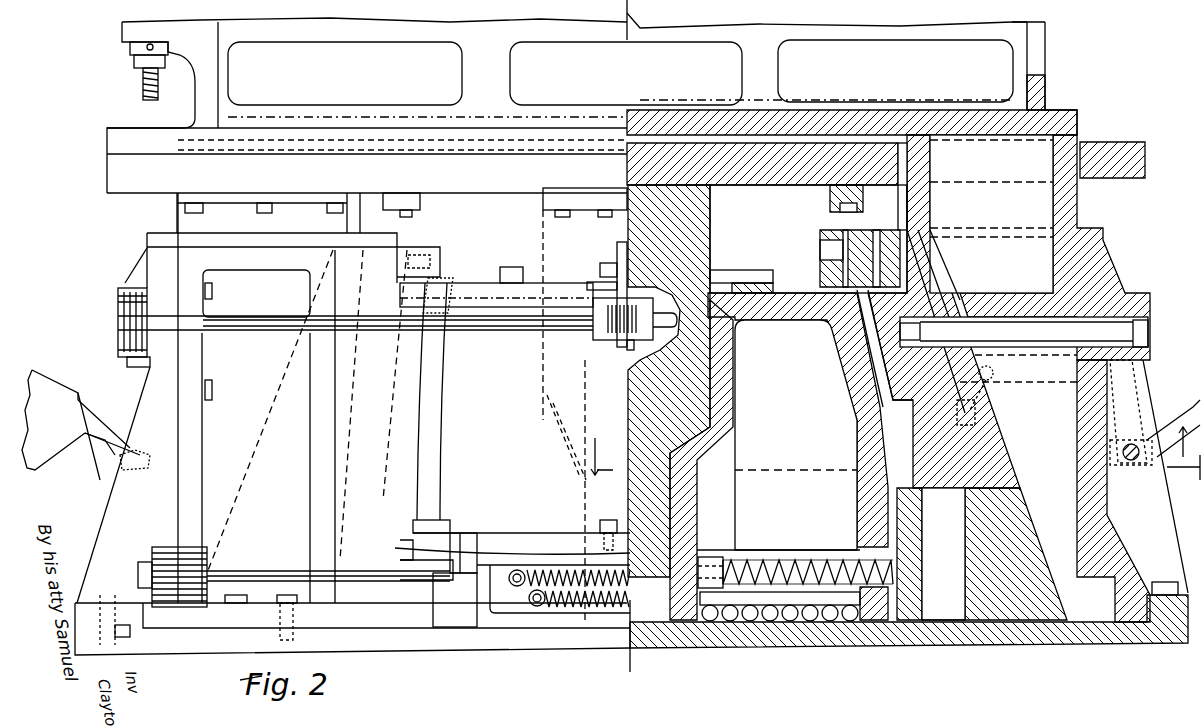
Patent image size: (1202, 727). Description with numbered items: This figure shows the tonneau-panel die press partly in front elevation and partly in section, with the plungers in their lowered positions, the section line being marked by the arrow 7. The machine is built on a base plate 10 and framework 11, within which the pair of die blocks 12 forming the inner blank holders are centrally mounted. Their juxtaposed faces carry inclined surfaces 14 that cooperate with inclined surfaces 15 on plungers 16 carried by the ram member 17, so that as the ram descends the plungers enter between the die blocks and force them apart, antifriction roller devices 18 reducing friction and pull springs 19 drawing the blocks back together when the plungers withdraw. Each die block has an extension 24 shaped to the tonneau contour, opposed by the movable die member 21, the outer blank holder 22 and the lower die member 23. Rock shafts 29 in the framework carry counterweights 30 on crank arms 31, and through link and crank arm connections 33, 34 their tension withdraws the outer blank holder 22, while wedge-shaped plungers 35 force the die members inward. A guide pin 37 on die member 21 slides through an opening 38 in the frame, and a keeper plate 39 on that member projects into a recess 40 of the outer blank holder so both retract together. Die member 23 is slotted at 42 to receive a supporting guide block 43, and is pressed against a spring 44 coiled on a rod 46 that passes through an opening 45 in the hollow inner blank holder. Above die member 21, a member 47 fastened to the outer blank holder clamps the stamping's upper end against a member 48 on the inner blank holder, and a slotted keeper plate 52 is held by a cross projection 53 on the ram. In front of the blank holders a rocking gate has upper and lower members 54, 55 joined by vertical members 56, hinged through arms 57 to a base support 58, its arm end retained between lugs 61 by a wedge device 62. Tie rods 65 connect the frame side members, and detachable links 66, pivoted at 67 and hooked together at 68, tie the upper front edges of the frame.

The section line arrow 7 is at (895, 459).
The base plate 10 is at (990, 647).
The framework 11 is at (133, 383).
The die blocks 12 is at (738, 372).
The inclined surfaces 14 is at (560, 445).
The inclined surfaces 15 is at (557, 420).
The plungers 16 is at (712, 208).
The ram member 17 is at (776, 190).
The antifriction roller devices 18 is at (745, 640).
The pull springs 19 is at (540, 607).
The movable die member 21 is at (970, 270).
The outer blank holder 22 is at (1015, 458).
The die member 23 is at (1055, 528).
The extension 24 is at (895, 428).
The rock shafts 29 is at (1133, 462).
The counterweights 30 is at (53, 401).
The crank arms 31 is at (82, 440).
The link connection 33 is at (1013, 395).
The crank arm connection 34 is at (1153, 415).
The wedge-shaped plungers 35 is at (1018, 394).
The guide pin 37 is at (1105, 290).
The opening 38 is at (1148, 335).
The keeper plate 39 is at (968, 293).
The recess 40 is at (980, 417).
The slot 42 is at (943, 607).
The supporting guide block 43 is at (943, 554).
The spring 44 is at (790, 558).
The opening 45 is at (858, 590).
The rod 46 is at (758, 556).
The member 47 is at (945, 236).
The member 48 is at (830, 248).
The keeper plate 52 is at (1112, 183).
The cross projection 53 is at (862, 218).
The upper gate member 54 is at (513, 533).
The lower gate member 55 is at (490, 298).
The vertical members 56 is at (438, 378).
The arms 57 is at (445, 563).
The base support 58 is at (478, 600).
The lugs 61 is at (600, 252).
The wedge device 62 is at (598, 268).
The tie rods 65 is at (270, 571).
The detachable links 66 is at (258, 316).
The pivot 67 is at (125, 285).
The hook connection 68 is at (612, 338).